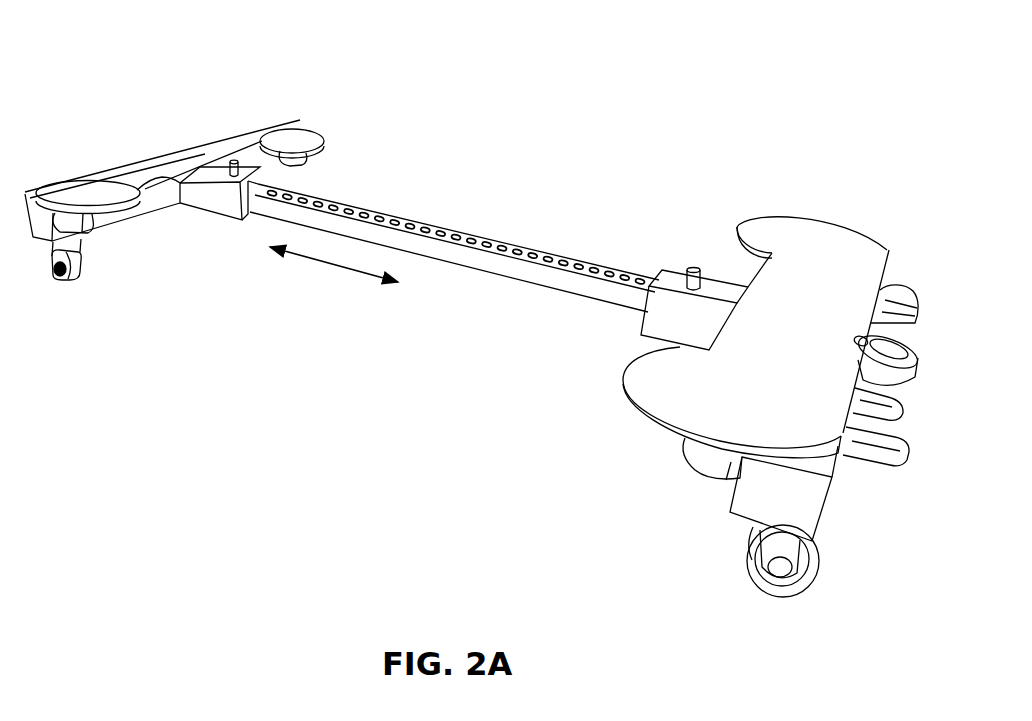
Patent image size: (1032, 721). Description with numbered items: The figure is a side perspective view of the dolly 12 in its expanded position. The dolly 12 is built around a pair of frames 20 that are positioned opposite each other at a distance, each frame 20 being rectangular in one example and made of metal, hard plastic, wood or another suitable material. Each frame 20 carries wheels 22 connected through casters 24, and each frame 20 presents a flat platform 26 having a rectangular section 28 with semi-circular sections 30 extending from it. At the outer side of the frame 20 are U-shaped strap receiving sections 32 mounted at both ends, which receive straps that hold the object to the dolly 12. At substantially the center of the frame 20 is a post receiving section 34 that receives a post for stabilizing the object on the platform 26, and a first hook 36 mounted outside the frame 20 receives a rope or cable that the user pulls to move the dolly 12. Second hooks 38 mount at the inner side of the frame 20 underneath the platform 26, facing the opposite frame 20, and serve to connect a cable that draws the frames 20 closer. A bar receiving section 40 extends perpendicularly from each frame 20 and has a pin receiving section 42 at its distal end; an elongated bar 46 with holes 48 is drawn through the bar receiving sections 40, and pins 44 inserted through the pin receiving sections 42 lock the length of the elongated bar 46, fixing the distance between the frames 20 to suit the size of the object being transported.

The dolly 12 is at (115, 41).
The frame 20 is at (145, 203).
The wheel 22 is at (77, 270).
The caster 24 is at (55, 279).
The platform 26 is at (804, 245).
The rectangular section 28 is at (852, 282).
The semi-circular section 30 is at (160, 159).
The strap receiving section 32 is at (905, 290).
The post receiving section 34 is at (915, 347).
The first hook 36 is at (907, 388).
The second hook 38 is at (700, 452).
The bar receiving section 40 is at (217, 172).
The pin receiving section 42 is at (683, 277).
The pin 44 is at (234, 158).
The elongated bar 46 is at (467, 268).
The hole 48 is at (538, 250).